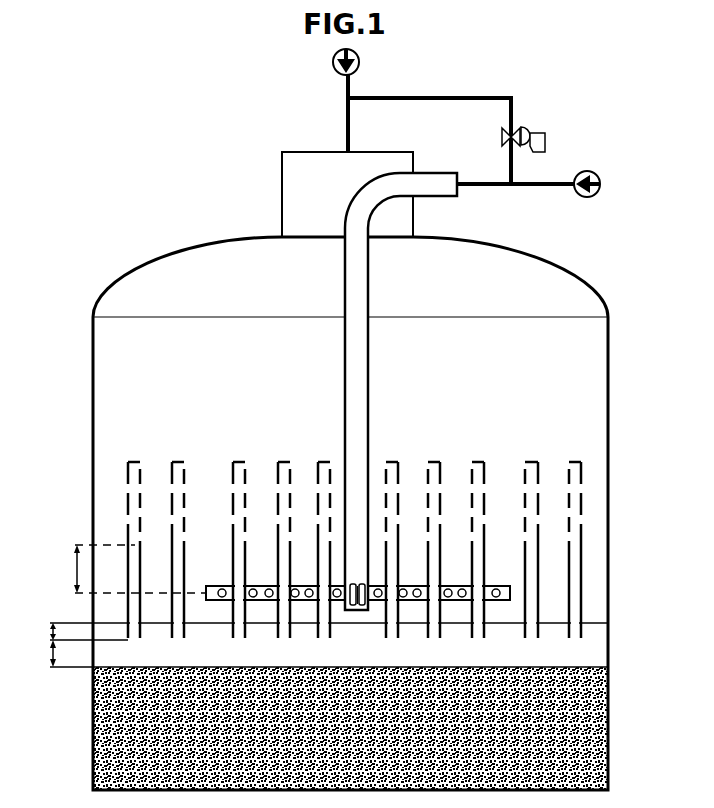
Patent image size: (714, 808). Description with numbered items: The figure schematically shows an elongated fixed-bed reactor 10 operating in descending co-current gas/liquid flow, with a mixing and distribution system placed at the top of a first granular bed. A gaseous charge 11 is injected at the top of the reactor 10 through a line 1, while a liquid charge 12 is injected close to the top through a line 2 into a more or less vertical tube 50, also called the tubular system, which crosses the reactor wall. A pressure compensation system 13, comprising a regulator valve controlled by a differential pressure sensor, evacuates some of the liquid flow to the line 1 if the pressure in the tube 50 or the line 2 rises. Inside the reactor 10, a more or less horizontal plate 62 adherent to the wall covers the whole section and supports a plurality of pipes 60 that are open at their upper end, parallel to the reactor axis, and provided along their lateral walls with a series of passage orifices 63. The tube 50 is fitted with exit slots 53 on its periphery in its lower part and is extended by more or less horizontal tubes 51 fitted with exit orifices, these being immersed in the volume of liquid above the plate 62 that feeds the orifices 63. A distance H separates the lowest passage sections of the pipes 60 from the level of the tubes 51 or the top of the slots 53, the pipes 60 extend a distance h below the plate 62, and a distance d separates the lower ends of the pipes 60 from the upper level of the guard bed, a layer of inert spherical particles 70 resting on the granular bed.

The line 1 is at (346, 127).
The line 2 is at (477, 189).
The fixed-bed reactor 10 is at (163, 255).
The gaseous charge 11 is at (333, 63).
The liquid charge 12 is at (603, 196).
The pressure compensation system 13 is at (518, 125).
The tube 50 is at (394, 419).
The horizontal tubes 51 is at (455, 600).
The exit slots 53 is at (357, 606).
The pipes 60 is at (396, 526).
The plate 62 is at (594, 623).
The passage orifices 63 is at (582, 515).
The layer of inert spherical particles 70 is at (584, 667).
The distance H is at (70, 570).
The distance h is at (50, 632).
The distance d is at (50, 655).